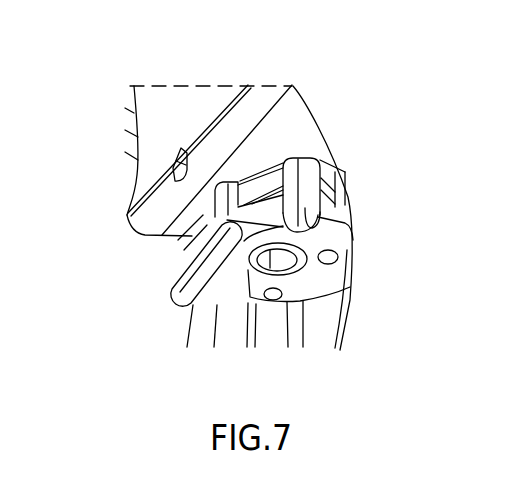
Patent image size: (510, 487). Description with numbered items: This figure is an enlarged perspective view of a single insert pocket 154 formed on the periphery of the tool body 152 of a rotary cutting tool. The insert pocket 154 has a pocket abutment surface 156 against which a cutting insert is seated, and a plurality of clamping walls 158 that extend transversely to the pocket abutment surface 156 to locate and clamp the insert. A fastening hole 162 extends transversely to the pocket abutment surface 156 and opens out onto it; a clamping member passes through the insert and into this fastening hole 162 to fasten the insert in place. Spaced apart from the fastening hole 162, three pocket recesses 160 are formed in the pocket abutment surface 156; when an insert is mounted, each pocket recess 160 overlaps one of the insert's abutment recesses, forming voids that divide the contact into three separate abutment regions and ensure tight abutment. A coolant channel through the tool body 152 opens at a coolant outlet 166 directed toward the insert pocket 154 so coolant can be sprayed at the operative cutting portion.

The tool body 152 is at (172, 90).
The insert pocket 154 is at (334, 154).
The pocket abutment surface 156 is at (325, 281).
The clamping walls 158 is at (270, 180).
The pocket recesses 160 is at (341, 243).
The fastening hole 162 is at (274, 272).
The coolant outlet 166 is at (168, 178).